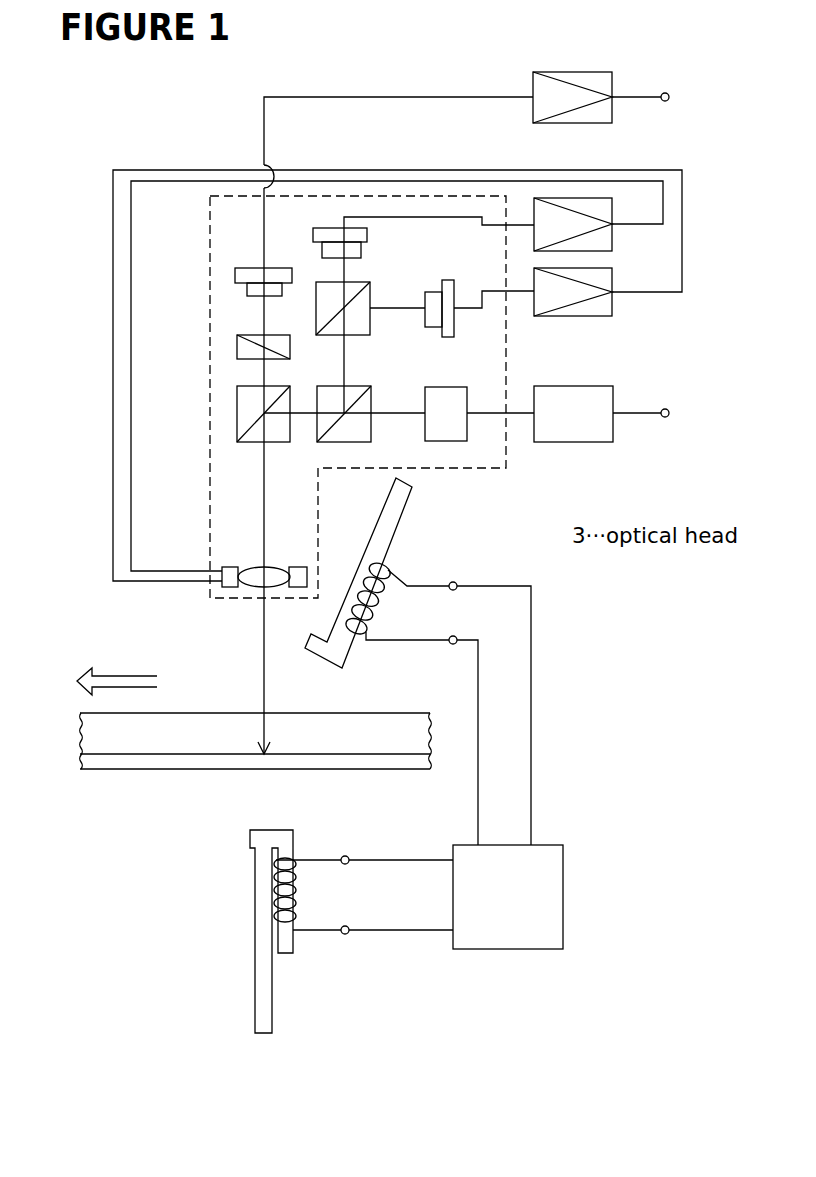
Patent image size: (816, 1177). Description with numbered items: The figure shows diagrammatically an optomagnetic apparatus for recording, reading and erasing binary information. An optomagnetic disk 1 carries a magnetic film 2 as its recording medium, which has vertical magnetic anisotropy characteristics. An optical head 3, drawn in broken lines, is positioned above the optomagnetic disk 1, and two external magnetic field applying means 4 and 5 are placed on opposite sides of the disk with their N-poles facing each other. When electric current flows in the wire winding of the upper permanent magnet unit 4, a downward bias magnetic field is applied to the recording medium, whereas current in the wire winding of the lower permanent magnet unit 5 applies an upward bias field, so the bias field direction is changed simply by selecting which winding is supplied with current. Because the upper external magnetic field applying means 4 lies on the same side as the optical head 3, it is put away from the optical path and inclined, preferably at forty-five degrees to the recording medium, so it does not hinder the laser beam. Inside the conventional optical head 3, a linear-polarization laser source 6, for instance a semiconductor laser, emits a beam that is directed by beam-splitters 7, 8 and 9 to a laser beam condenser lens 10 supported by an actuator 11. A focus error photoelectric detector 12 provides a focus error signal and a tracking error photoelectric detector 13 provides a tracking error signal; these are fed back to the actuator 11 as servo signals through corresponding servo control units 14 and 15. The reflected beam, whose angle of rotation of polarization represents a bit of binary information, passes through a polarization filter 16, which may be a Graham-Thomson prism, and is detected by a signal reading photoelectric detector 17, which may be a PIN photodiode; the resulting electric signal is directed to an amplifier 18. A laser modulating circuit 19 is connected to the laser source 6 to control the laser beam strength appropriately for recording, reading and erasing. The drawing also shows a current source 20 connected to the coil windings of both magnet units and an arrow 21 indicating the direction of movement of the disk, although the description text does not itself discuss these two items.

The optomagnetic disk 1 is at (68, 712).
The magnetic film 2 is at (81, 770).
The optical head 3 is at (506, 440).
The upper external magnetic field applying means 4 is at (418, 548).
The lower external magnetic field applying means 5 is at (292, 962).
The linear-polarization laser source 6 is at (460, 430).
The beam-splitter 7 is at (371, 428).
The beam-splitter 8 is at (288, 433).
The beam-splitter 9 is at (370, 318).
The laser beam condenser lens 10 is at (272, 567).
The actuator 11 is at (230, 567).
The focus error photoelectric detector 12 is at (361, 250).
The tracking error photoelectric detector 13 is at (448, 280).
The servo control unit 14 is at (612, 235).
The servo control unit 15 is at (612, 300).
The polarization filter 16 is at (256, 335).
The signal reading photoelectric detector 17 is at (253, 268).
The amplifier 18 is at (588, 123).
The laser modulating circuit 19 is at (613, 428).
The current source 20 is at (563, 885).
The direction of medium movement 21 is at (97, 659).